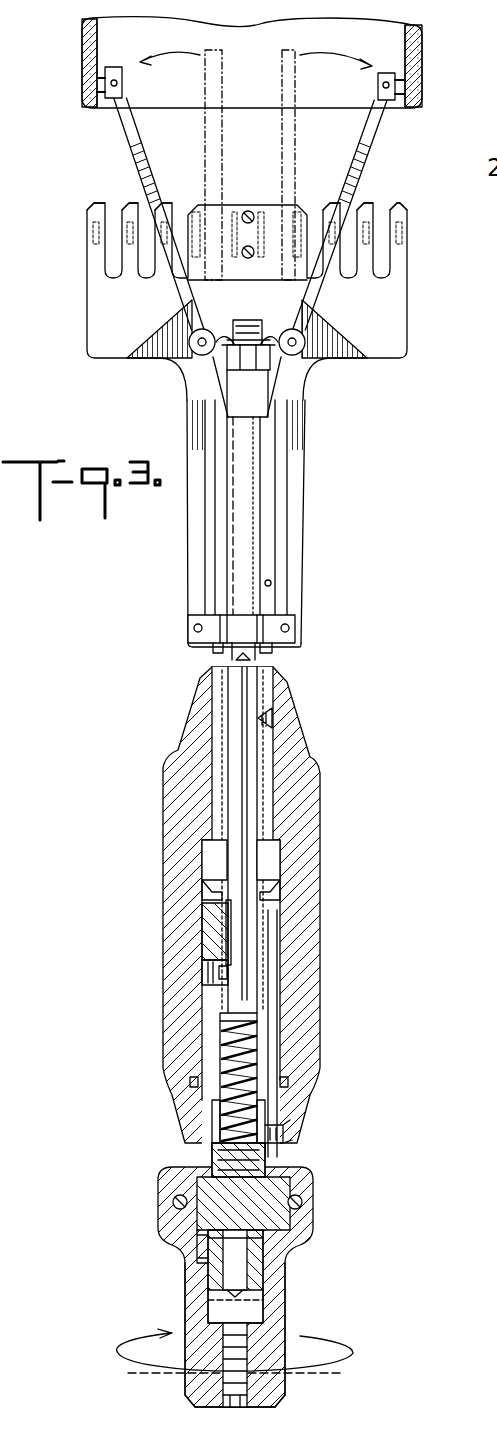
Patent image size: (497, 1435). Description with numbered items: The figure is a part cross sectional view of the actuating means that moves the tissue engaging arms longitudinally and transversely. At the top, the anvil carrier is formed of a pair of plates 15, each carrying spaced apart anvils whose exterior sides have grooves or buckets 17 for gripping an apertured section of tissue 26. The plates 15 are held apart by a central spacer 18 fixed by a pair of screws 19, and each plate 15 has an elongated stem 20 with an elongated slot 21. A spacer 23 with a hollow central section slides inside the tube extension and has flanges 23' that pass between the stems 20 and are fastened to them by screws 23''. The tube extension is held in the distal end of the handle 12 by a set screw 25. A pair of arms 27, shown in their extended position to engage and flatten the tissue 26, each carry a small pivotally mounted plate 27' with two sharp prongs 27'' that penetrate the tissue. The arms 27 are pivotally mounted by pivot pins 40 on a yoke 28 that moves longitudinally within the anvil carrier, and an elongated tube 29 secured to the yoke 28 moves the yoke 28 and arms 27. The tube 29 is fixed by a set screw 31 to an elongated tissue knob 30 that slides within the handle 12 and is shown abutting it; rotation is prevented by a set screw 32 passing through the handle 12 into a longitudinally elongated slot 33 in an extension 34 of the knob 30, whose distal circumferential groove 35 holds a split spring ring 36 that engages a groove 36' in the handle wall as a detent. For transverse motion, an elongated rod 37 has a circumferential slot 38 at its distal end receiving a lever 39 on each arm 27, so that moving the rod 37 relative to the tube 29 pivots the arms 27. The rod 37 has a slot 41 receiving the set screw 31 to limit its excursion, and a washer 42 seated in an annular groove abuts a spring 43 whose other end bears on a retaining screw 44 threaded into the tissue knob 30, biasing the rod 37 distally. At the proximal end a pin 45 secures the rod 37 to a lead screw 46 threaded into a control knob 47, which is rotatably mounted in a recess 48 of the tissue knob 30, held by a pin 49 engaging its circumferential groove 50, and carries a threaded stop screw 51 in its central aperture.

The handle 12 is at (313, 828).
The plates 15 is at (390, 312).
The grooves or buckets 17 is at (391, 225).
The spacer 18 is at (247, 213).
The screws 19 is at (250, 248).
The stem 20 is at (197, 555).
The slot 21 is at (272, 583).
The spacer 23 is at (253, 627).
The flanges 23' is at (282, 615).
The screws 23'' is at (247, 656).
The set screw 25 is at (272, 727).
The apertured section of tissue 26 is at (420, 43).
The arms 27 is at (248, 257).
The pivotally mounted plate 27' is at (263, 108).
The teeth or prongs 27'' is at (259, 69).
The yoke 28 is at (283, 378).
The tube 29 is at (250, 488).
The tissue knob 30 is at (313, 1177).
The set screw 31 is at (213, 983).
The set screw 32 is at (293, 1135).
The slot 33 is at (273, 950).
The extension 34 is at (208, 938).
The circumferential groove 35 is at (207, 890).
The split spring ring 36 is at (320, 870).
The groove 36' is at (285, 1094).
The rod 37 is at (243, 682).
The circumferential slot 38 is at (246, 320).
The lever 39 is at (221, 330).
The pivot pin 40 is at (196, 352).
The slot 41 is at (232, 923).
The washer 42 is at (253, 1017).
The spring 43 is at (255, 1058).
The retaining screw 44 is at (217, 1147).
The pin 45 is at (200, 1255).
The lead screw 46 is at (258, 1255).
The control knob 47 is at (280, 1308).
The recess 48 is at (212, 1148).
The pin 49 is at (302, 1204).
The circumferential groove 50 is at (173, 1202).
The stop screw 51 is at (232, 1380).